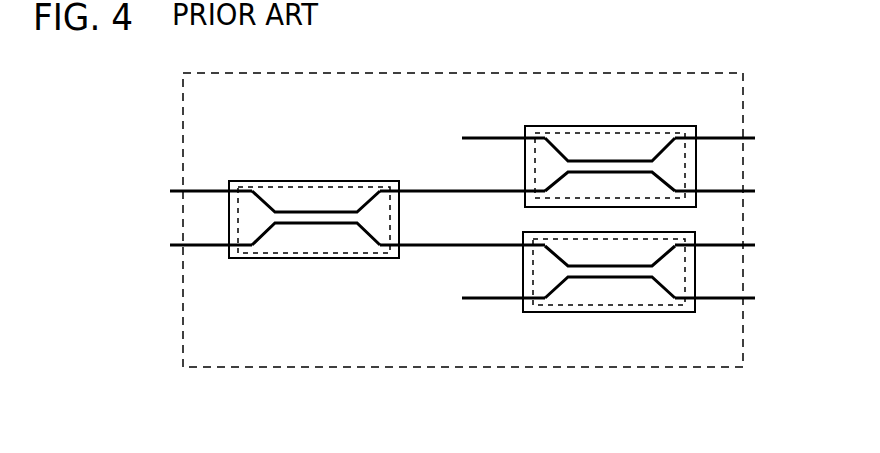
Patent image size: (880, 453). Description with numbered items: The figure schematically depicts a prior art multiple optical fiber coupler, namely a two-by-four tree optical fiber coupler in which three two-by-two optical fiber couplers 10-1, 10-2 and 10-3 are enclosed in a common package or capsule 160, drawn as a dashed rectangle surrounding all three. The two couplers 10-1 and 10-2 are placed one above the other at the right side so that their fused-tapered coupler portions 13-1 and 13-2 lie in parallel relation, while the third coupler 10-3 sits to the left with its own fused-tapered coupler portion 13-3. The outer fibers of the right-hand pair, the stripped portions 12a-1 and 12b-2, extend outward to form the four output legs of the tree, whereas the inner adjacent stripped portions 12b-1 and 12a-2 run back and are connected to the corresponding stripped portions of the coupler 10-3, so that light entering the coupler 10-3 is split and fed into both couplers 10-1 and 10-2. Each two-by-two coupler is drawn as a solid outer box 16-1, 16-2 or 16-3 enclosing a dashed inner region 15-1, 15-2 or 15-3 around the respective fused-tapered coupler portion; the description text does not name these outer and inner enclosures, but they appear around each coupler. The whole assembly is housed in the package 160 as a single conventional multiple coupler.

The package 160 is at (570, 73).
The 2-by-2 optical fiber coupler 10-1 is at (643, 158).
The 2-by-2 optical fiber coupler 10-2 is at (598, 319).
The 2-by-2 optical fiber coupler 10-3 is at (303, 234).
The stripped portion 12a-1 is at (468, 136).
The stripped portion 12b-1 is at (205, 190).
The stripped portion 12a-2 is at (205, 247).
The stripped portion 12b-2 is at (468, 299).
The fused-tapered coupler portion 13-1 is at (600, 160).
The fused-tapered coupler portion 13-2 is at (612, 278).
The fused-tapered coupler portion 13-3 is at (310, 228).
The protective resin of first coupler 15-1 is at (548, 199).
The protective resin of second coupler 15-2 is at (548, 307).
The protective resin of third coupler 15-3 is at (348, 187).
The housing of first coupler 16-1 is at (625, 128).
The housing of second coupler 16-2 is at (650, 312).
The housing of third coupler 16-3 is at (265, 181).